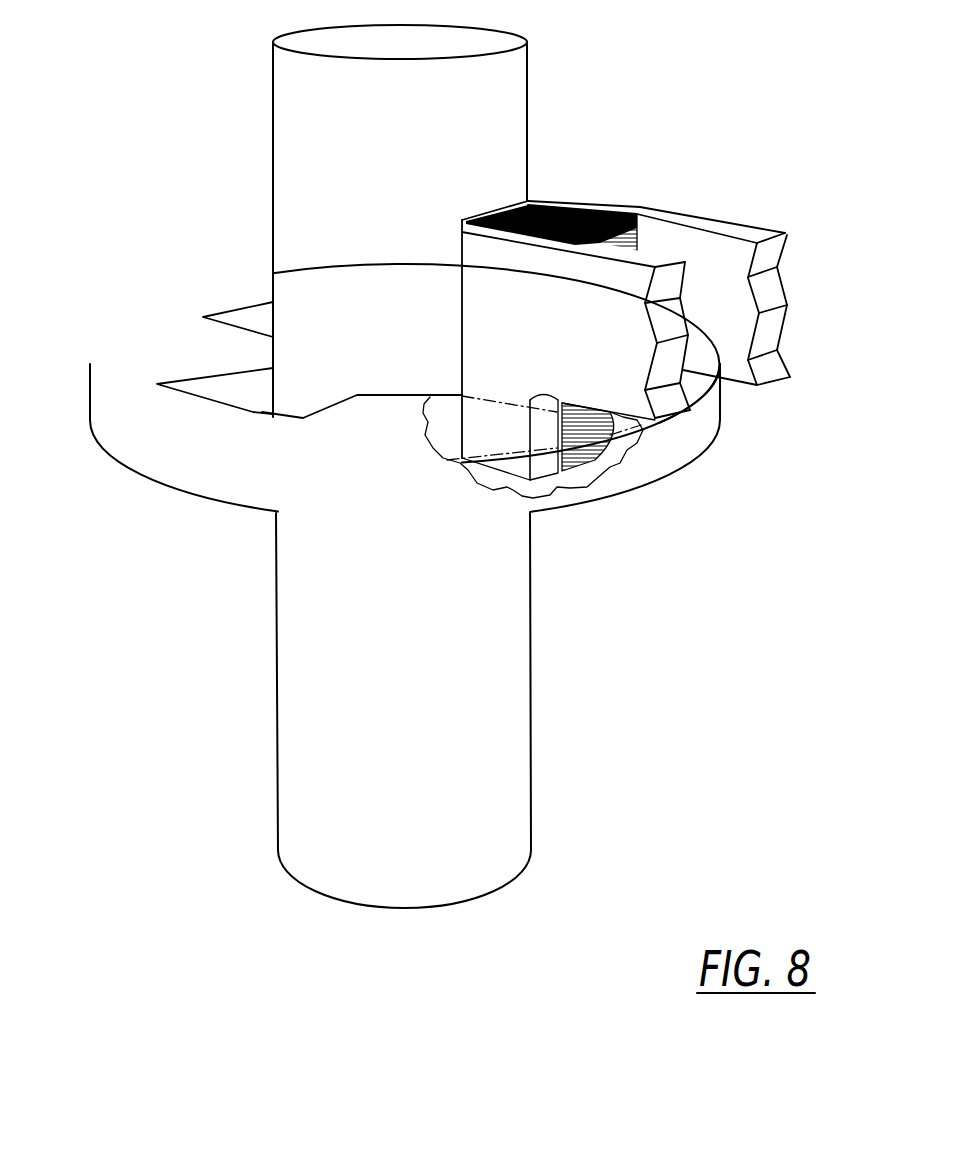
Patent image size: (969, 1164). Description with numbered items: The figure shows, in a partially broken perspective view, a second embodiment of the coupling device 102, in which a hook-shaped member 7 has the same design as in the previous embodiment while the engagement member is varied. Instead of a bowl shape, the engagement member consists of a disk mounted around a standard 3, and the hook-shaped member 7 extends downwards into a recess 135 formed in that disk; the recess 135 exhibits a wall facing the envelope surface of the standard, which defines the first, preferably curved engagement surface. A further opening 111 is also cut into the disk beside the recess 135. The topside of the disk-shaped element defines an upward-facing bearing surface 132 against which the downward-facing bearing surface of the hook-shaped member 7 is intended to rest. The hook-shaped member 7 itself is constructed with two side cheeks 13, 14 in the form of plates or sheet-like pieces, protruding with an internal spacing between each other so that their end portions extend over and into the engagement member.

The column 3 is at (535, 747).
The coupling device 102 is at (595, 518).
The slot 111 is at (253, 320).
The recess 135 is at (241, 398).
The upward-facing bearing surface 132 is at (360, 433).
The side cheek 13 is at (603, 302).
The hook-shaped member 7 is at (683, 208).
The side cheek 14 is at (737, 257).